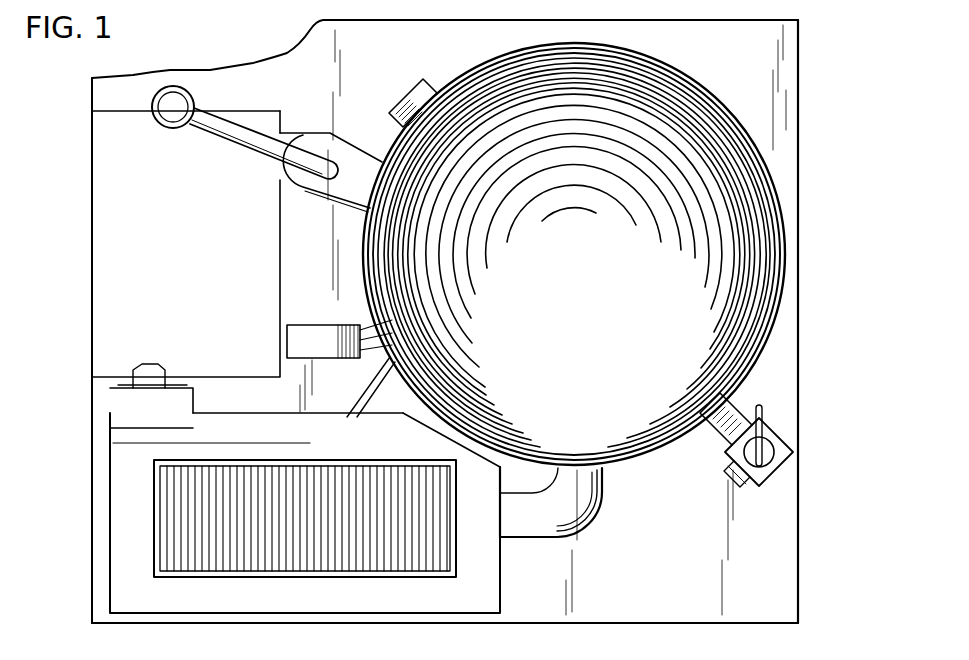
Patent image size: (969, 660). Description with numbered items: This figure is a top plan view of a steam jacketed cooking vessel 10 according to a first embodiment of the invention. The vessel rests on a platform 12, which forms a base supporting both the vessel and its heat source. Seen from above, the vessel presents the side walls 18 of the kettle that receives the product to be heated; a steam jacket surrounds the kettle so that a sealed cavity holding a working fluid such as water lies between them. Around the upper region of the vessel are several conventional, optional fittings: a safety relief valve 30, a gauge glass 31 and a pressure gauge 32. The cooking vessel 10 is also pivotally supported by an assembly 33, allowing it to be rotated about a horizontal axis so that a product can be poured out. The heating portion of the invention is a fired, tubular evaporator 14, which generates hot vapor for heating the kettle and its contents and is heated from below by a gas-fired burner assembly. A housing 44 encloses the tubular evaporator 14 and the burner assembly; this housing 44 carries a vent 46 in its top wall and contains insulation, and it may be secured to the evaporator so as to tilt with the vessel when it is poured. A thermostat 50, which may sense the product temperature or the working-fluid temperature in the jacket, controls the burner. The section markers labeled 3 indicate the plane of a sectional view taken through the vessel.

The steam jacketed cooking vessel 10 is at (743, 112).
The platform 12 is at (787, 523).
The tubular evaporator 14 is at (583, 513).
The side walls 18 is at (767, 343).
The safety relief valve 30 is at (798, 453).
The gauge glass 31 is at (417, 97).
The pressure gauge 32 is at (320, 325).
The assembly 33 is at (297, 133).
The housing 44 is at (132, 585).
The vent 46 is at (173, 527).
The thermostat 50 is at (122, 403).
The section line 3- 3 is at (573, 5).